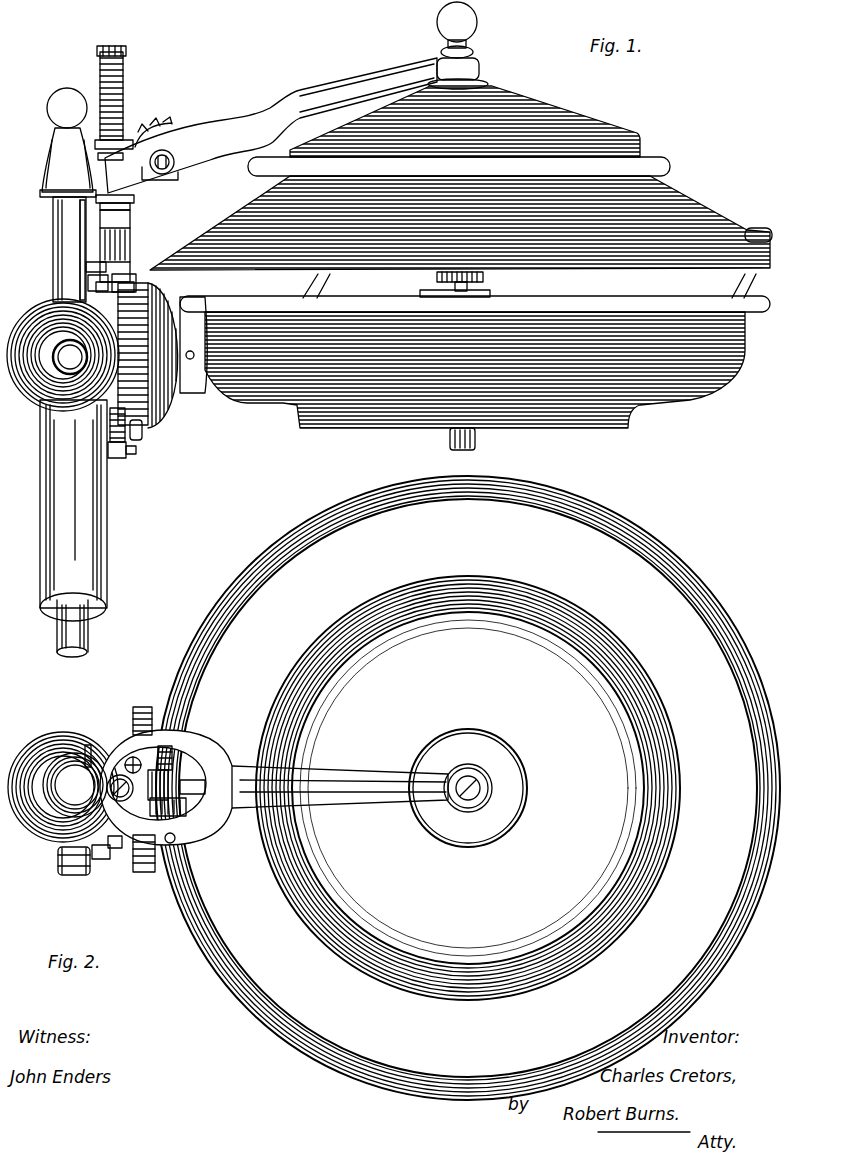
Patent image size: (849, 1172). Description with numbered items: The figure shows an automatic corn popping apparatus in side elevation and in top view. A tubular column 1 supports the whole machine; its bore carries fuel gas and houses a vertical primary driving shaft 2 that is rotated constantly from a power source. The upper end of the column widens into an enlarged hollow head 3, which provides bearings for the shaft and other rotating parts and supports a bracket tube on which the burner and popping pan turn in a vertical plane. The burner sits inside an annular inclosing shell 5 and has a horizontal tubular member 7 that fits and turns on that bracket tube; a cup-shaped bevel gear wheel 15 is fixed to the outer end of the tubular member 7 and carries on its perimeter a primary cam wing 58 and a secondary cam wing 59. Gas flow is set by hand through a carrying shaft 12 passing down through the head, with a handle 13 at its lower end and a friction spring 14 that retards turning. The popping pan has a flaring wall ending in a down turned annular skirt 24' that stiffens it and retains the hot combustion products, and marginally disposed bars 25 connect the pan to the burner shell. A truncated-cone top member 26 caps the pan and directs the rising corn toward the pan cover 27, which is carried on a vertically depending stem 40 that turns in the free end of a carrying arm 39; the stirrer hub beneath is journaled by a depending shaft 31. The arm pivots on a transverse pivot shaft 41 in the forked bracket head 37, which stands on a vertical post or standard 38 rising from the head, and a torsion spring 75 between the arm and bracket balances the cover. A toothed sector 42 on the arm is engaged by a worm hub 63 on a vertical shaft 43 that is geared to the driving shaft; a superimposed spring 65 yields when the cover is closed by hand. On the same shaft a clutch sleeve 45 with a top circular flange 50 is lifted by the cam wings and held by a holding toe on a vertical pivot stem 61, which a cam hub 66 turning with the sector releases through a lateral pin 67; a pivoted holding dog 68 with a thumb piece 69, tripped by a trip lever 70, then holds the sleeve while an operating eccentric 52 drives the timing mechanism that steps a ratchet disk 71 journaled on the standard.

In FIG. 1, the tubular column 1 is at (106, 546).
In FIG. 1, the primary driving shaft 2 is at (88, 638).
In FIG. 1, the enlarged hollow head 3 is at (26, 326).
In FIG. 2, the enlarged hollow head 3 is at (32, 758).
In FIG. 1, the annular inclosing shell 5 is at (732, 356).
In FIG. 1, the tubular member 7 is at (208, 388).
In FIG. 1, the carrying shaft 12 is at (117, 458).
In FIG. 1, the handle 13 is at (134, 452).
In FIG. 1, the friction spring 14 is at (110, 428).
In FIG. 1, the cup-shaped bevel gear wheel 15 is at (152, 382).
In FIG. 2, the cup-shaped bevel gear wheel 15 is at (145, 710).
In FIG. 1, the down turned annular skirt 24' is at (755, 220).
In FIG. 2, the down turned annular skirt 24' is at (468, 788).
In FIG. 1, the marginally disposed bars 25 is at (328, 290).
In FIG. 1, the top member or hood 26 is at (690, 200).
In FIG. 2, the top member or hood 26 is at (468, 788).
In FIG. 1, the pan cover 27 is at (577, 122).
In FIG. 2, the pan cover 27 is at (468, 788).
In FIG. 1, the depending shaft 31 is at (488, 292).
In FIG. 1, the bracket head 37 is at (44, 170).
In FIG. 2, the bracket head 37 is at (155, 882).
In FIG. 1, the vertical post or standard 38 is at (56, 240).
In FIG. 1, the carrying arm 39 is at (248, 124).
In FIG. 2, the carrying arm 39 is at (340, 787).
In FIG. 1, the vertically depending stem 40 is at (482, 86).
In FIG. 1, the transverse pivot shaft 41 is at (172, 172).
In FIG. 1, the toothed sector 42 is at (156, 128).
In FIG. 2, the toothed sector 42 is at (190, 784).
In FIG. 1, the vertical shaft 43 is at (98, 76).
In FIG. 1, the clutch sleeve 45 is at (130, 240).
In FIG. 1, the top circular flange 50 is at (130, 208).
In FIG. 1, the operating eccentric 52 is at (132, 199).
In FIG. 1, the primary cam wing 58 is at (134, 284).
In FIG. 1, the secondary cam wing 59 is at (142, 432).
In FIG. 2, the vertical pivot stem 61 is at (130, 758).
In FIG. 1, the worm hub 63 is at (122, 140).
In FIG. 1, the superimposed spring 65 is at (124, 80).
In FIG. 2, the cam hub 66 is at (172, 766).
In FIG. 2, the lateral pin 67 is at (168, 748).
In FIG. 1, the pivoted holding dog 68 is at (136, 284).
In FIG. 2, the pivoted holding dog 68 is at (118, 846).
In FIG. 1, the thumb piece 69 is at (88, 283).
In FIG. 2, the thumb piece 69 is at (96, 872).
In FIG. 1, the trip lever 70 is at (86, 266).
In FIG. 2, the trip lever 70 is at (104, 860).
In FIG. 1, the ratchet disk 71 is at (82, 214).
In FIG. 2, the ratchet disk 71 is at (88, 744).
In FIG. 2, the torsion spring 75 is at (186, 812).